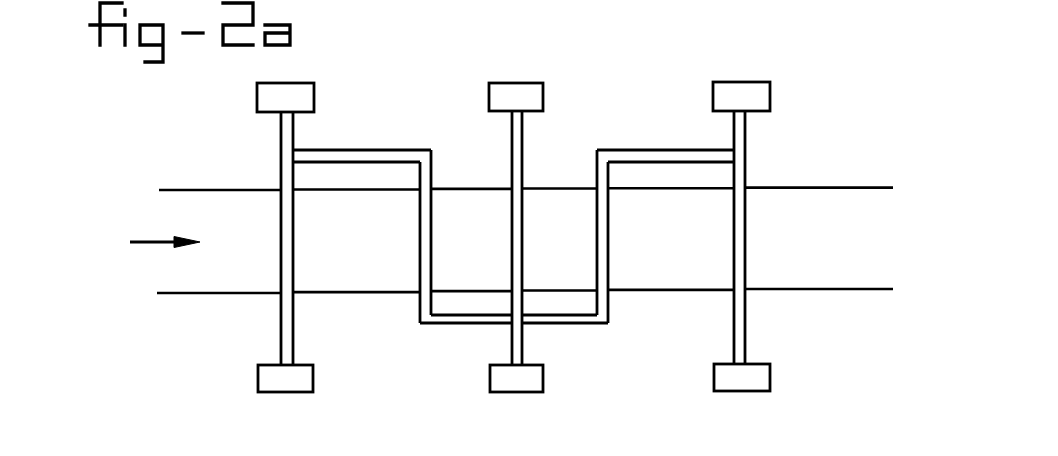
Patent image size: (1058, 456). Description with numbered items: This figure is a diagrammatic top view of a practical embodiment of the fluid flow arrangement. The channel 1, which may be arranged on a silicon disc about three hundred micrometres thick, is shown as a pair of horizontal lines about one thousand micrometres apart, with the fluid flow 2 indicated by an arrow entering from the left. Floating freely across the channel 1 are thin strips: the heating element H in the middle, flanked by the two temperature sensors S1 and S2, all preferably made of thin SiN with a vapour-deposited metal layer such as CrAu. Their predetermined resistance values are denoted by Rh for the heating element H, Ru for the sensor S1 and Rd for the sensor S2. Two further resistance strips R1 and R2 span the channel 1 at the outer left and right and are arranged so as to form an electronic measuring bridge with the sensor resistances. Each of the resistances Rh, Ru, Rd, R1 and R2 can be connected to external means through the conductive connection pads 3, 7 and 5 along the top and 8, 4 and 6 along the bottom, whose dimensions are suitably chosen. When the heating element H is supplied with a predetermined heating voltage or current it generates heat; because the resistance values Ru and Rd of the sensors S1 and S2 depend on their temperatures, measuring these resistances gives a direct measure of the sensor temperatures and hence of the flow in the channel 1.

The channel 1 is at (190, 277).
The flow direction 2 is at (143, 241).
The conductive connection pad 3 is at (302, 97).
The conductive connection pad 4 is at (537, 380).
The conductive connection pad 5 is at (762, 92).
The conductive connection pad 6 is at (765, 378).
The conductive connection pad 7 is at (530, 95).
The conductive connection pad 8 is at (307, 380).
The resistance strip R1 is at (293, 242).
The resistance strip R2 is at (745, 242).
The resistance value of temperature sensor S1 Ru is at (431, 225).
The resistance value of temperature sensor S2 Rd is at (608, 225).
The resistance value of heating element H Rh is at (522, 225).
The temperature sensor S1 is at (431, 265).
The temperature sensor S2 is at (608, 265).
The heating element H is at (522, 265).